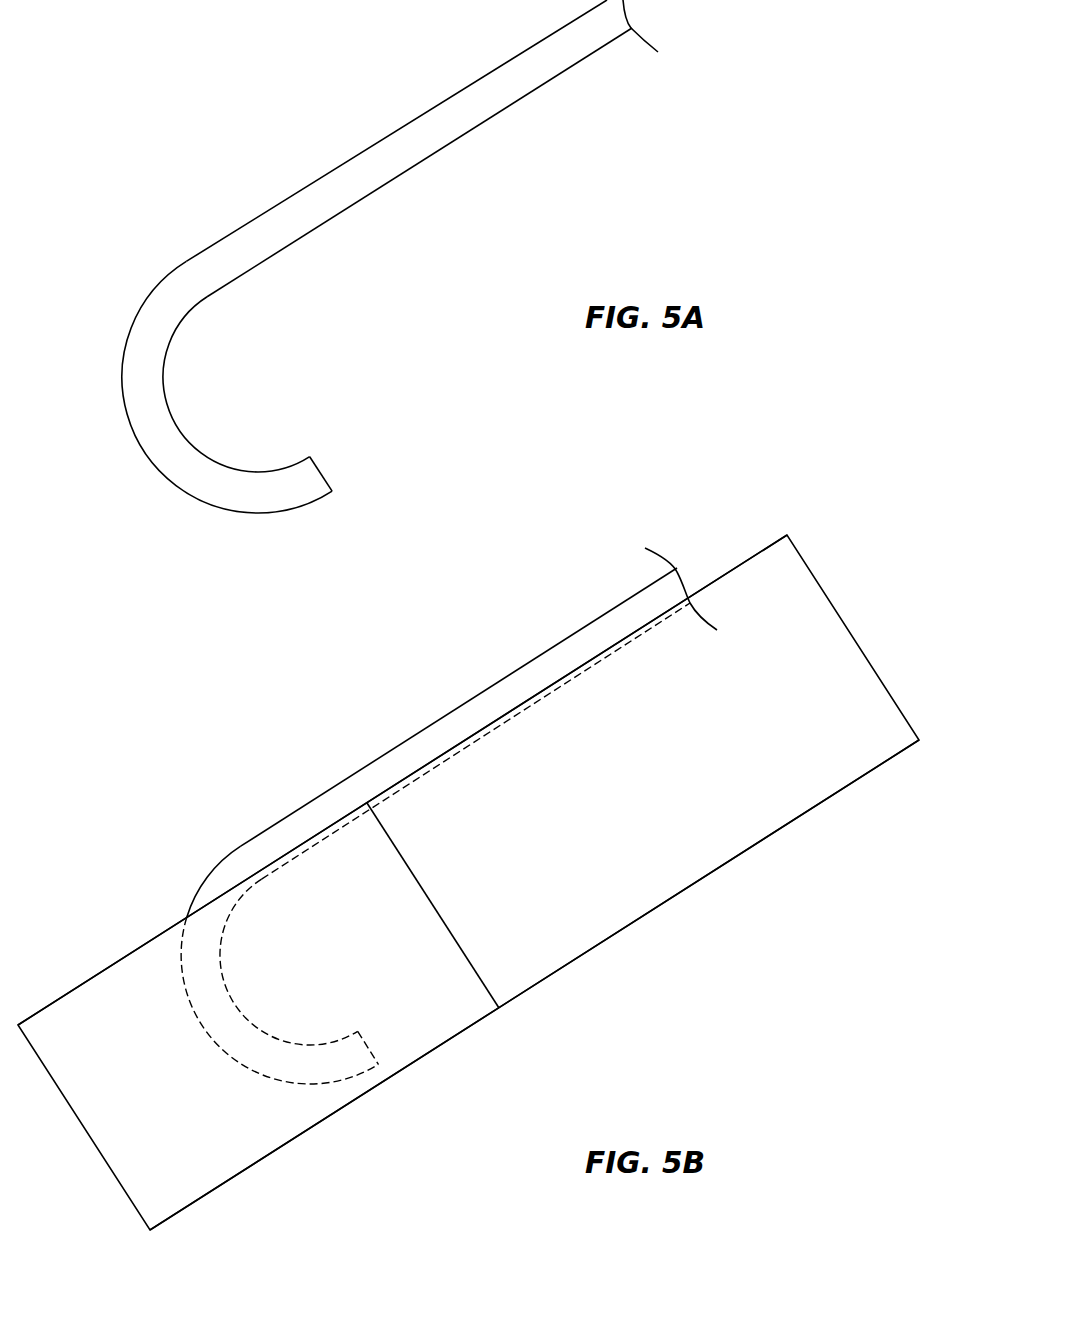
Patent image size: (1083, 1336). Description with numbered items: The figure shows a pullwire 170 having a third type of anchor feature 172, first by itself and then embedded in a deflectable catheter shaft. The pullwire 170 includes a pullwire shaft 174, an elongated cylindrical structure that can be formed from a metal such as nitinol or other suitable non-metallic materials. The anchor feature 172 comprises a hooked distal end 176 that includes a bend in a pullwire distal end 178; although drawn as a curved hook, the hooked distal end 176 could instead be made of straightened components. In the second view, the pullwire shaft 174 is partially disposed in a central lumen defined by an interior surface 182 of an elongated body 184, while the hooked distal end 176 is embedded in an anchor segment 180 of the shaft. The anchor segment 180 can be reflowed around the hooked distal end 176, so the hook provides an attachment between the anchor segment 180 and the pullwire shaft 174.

In FIG. 5A, the pullwire 170 is at (359, 256).
In FIG. 5B, the pullwire 170 is at (421, 818).
In FIG. 5A, the anchor feature 172 is at (196, 380).
In FIG. 5B, the anchor feature 172 is at (251, 939).
In FIG. 5A, the pullwire shaft 174 is at (468, 113).
In FIG. 5B, the pullwire shaft 174 is at (510, 673).
In FIG. 5A, the hooked distal end 176 is at (170, 452).
In FIG. 5B, the hooked distal end 176 is at (230, 1027).
In FIG. 5A, the pullwire distal end 178 is at (190, 287).
In FIG. 5B, the pullwire distal end 178 is at (245, 862).
In FIG. 5B, the anchor segment 180 is at (478, 857).
In FIG. 5B, the interior surface 182 is at (738, 567).
In FIG. 5B, the elongated body 184 is at (880, 773).